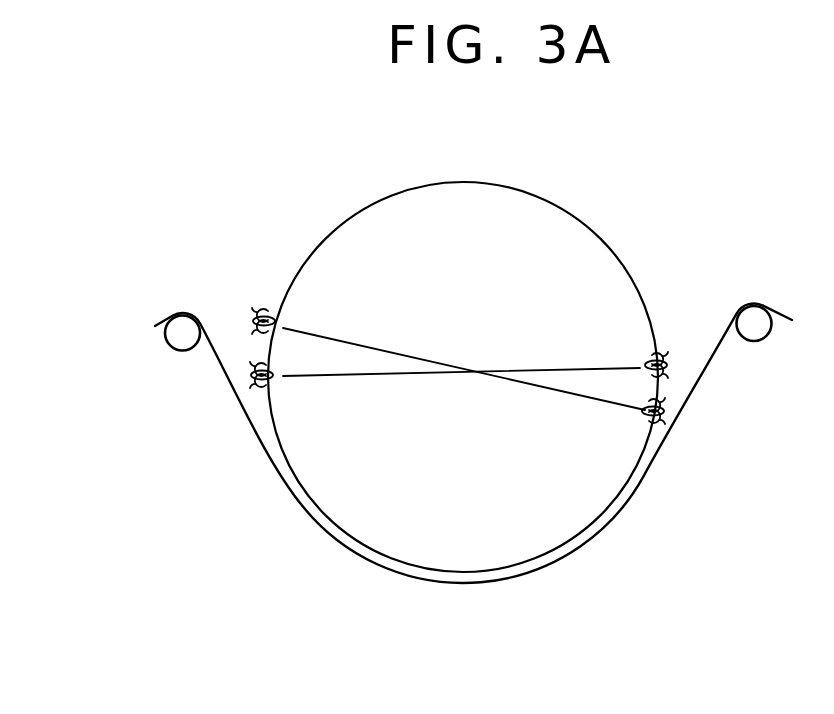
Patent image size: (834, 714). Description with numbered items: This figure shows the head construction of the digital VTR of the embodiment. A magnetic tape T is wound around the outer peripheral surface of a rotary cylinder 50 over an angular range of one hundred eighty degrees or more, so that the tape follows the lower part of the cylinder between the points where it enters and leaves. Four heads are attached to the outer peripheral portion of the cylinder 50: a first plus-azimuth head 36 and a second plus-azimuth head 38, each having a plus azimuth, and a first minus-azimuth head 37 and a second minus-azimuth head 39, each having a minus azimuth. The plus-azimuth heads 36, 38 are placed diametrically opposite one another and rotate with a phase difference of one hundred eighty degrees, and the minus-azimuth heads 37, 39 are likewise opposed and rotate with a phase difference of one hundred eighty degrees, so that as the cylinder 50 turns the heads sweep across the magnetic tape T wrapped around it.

The rotary cylinder 50 is at (592, 243).
The magnetic tape T is at (583, 547).
The head HA+ 36 is at (272, 393).
The head HA− 37 is at (253, 302).
The head HB+ 38 is at (660, 347).
The head HB− 39 is at (640, 432).